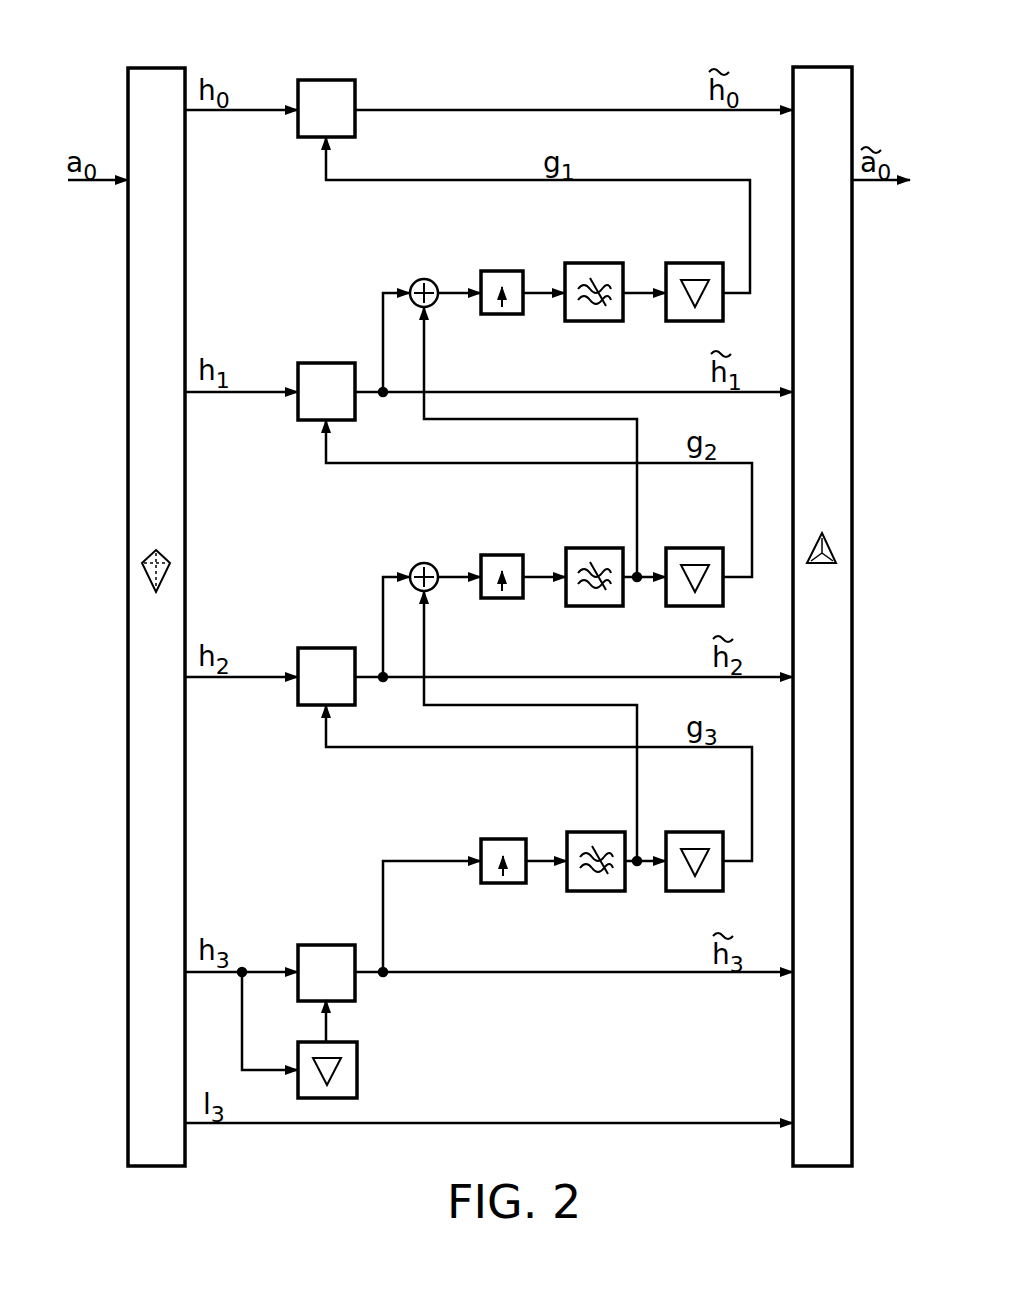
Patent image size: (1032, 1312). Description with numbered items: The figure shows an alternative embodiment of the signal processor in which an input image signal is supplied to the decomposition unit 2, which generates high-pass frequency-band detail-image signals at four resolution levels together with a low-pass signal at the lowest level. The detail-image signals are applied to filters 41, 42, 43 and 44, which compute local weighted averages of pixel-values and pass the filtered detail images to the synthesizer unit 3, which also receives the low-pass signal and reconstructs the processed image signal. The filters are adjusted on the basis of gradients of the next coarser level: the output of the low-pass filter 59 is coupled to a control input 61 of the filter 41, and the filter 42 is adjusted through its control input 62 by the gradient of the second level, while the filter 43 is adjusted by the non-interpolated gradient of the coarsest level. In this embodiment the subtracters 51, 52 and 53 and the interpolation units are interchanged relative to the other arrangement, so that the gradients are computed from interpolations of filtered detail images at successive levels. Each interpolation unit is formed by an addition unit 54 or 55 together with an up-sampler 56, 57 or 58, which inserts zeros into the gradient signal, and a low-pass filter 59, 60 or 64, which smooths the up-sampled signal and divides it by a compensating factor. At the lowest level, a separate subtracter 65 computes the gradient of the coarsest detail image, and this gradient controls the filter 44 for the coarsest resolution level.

The decomposition unit 2 is at (157, 67).
The synthesizer unit 3 is at (822, 67).
The filter 41 is at (317, 79).
The filter 42 is at (318, 362).
The filter 43 is at (318, 647).
The filter 44 is at (318, 944).
The subtracter 51 is at (694, 262).
The subtracter 52 is at (694, 547).
The subtracter 53 is at (694, 831).
The addition unit 54 is at (424, 278).
The addition unit 55 is at (424, 562).
The up-sampler 56 is at (503, 270).
The up-sampler 57 is at (503, 554).
The up-sampler 58 is at (503, 838).
The low-pass filter 59 is at (595, 262).
The low-pass filter 60 is at (595, 547).
The low-pass filter 64 is at (595, 831).
The control input 61 is at (318, 140).
The control input 62 is at (318, 422).
The separate subtracter 65 is at (357, 1075).